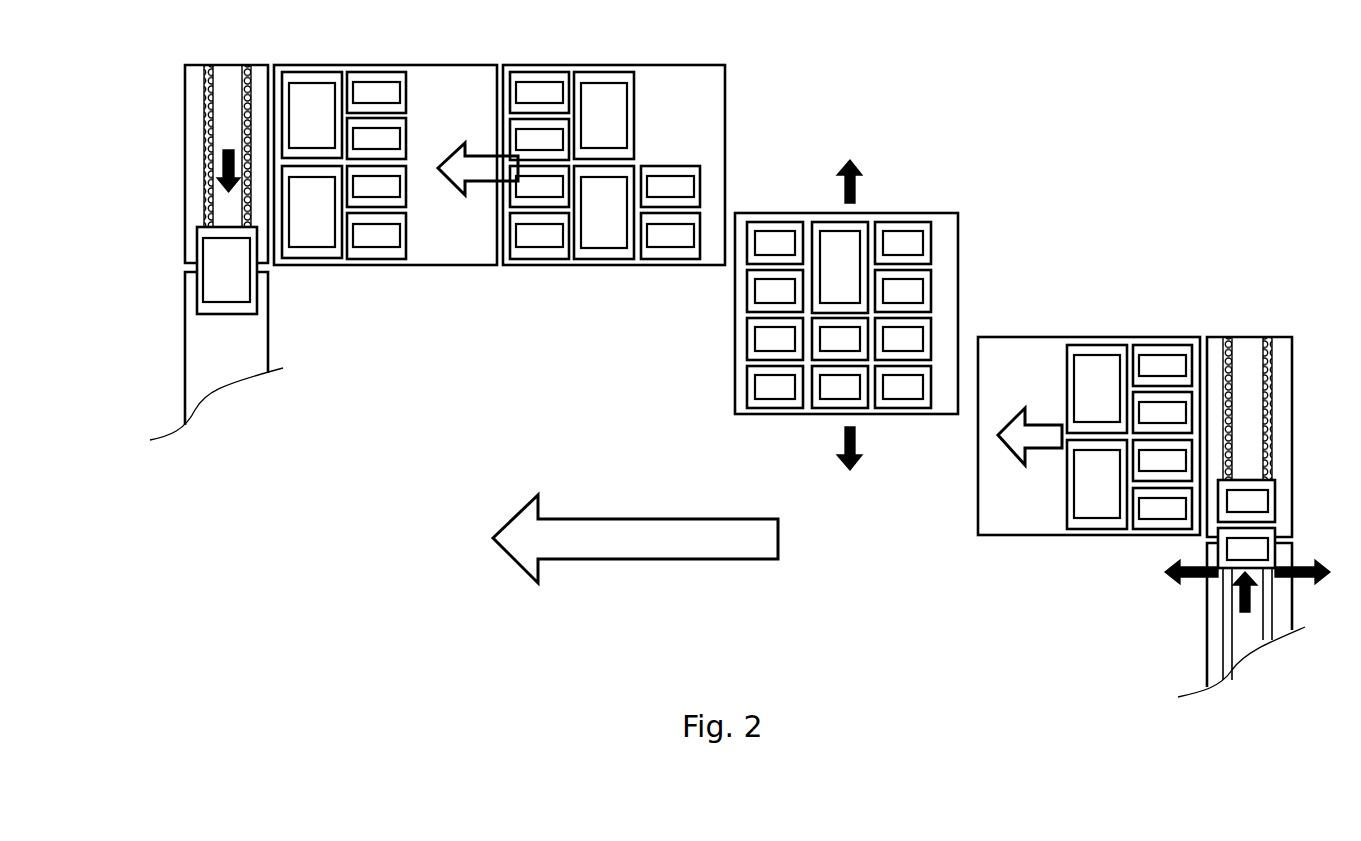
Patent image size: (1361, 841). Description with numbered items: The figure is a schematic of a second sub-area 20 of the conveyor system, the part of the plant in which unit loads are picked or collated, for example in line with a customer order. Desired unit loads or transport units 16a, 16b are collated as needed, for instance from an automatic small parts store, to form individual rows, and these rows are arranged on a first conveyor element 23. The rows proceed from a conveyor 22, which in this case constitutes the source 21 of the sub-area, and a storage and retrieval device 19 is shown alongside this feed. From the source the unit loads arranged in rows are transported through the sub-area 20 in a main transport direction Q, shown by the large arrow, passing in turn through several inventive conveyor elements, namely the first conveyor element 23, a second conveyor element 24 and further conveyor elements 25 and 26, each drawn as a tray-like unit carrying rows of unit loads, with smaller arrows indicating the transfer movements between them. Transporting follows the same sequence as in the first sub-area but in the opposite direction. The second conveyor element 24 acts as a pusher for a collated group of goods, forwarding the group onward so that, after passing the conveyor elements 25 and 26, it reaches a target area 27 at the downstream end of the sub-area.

The second sub-area 20 is at (958, 100).
The target area 27 is at (212, 377).
The conveyor element 26 is at (457, 250).
The conveyor element 25 is at (622, 267).
The second conveyor element 24 is at (753, 222).
The first conveyor element 23 is at (1033, 513).
The storage and retrieval device 19 is at (1217, 660).
The conveyor 22 is at (1245, 337).
The source 21 is at (1265, 337).
The unit load 16a is at (1253, 497).
The unit load 16b is at (1255, 548).